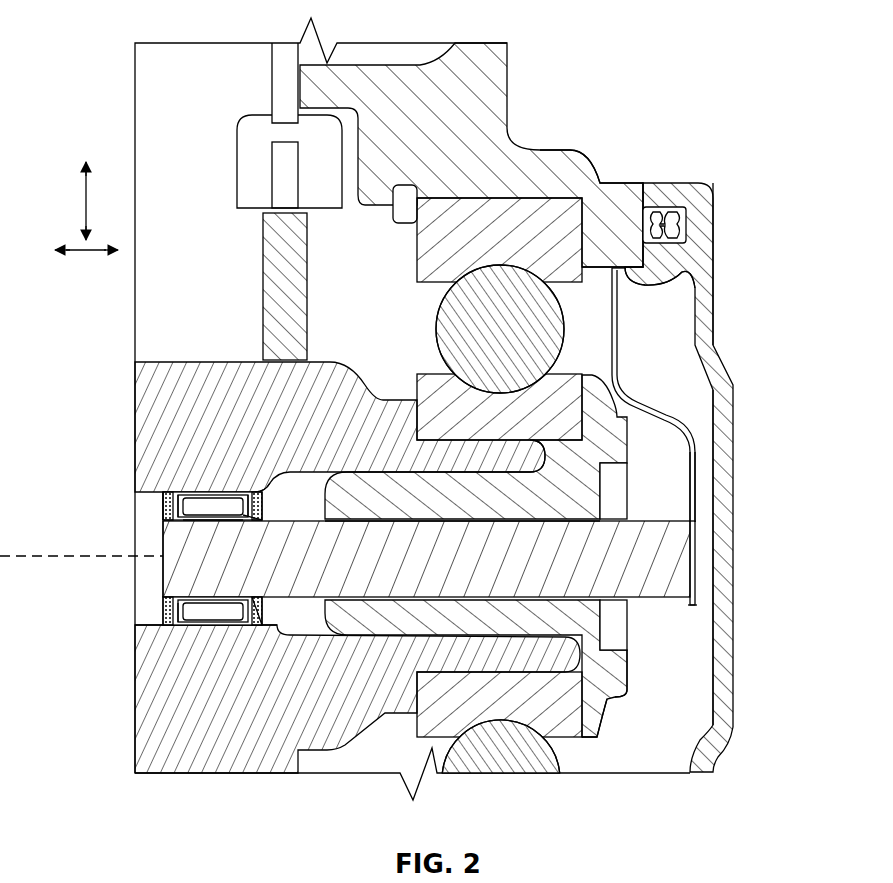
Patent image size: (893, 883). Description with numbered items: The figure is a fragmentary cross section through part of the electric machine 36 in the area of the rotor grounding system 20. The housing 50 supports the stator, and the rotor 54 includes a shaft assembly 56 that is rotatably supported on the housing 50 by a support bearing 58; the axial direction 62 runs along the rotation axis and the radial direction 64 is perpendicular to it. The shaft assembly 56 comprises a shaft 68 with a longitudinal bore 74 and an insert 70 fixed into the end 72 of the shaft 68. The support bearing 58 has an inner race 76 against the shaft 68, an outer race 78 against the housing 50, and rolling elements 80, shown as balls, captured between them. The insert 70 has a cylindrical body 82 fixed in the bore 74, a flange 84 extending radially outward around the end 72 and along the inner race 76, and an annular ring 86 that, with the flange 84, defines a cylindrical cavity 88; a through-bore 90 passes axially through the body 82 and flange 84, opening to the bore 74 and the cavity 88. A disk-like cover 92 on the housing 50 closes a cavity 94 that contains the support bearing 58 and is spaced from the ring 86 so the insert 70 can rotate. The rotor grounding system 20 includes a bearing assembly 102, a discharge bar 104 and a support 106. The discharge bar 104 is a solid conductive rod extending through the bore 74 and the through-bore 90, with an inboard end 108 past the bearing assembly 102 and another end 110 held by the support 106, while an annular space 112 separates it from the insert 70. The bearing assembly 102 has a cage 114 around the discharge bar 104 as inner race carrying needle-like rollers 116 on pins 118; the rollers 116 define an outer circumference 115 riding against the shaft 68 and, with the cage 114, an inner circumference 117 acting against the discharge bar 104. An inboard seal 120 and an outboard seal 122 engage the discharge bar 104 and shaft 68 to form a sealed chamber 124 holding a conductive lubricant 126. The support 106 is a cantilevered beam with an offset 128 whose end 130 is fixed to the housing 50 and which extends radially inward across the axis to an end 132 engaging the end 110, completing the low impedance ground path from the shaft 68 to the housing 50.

The rotor grounding system 20 is at (713, 547).
The electric machine 36 is at (703, 153).
The housing 50 is at (452, 143).
The rotor 54 is at (350, 352).
The shaft assembly 56 is at (130, 668).
The support bearing 58 is at (533, 190).
The axial direction 62 is at (87, 257).
The radial direction 64 is at (86, 202).
The shaft 68 is at (333, 433).
The insert 70 is at (433, 512).
The end 72 is at (607, 653).
The bore 74 is at (320, 490).
The inner race 76 is at (512, 425).
The outer race 78 is at (512, 253).
The rolling elements 80 is at (515, 343).
The cylindrical body 82 is at (365, 637).
The flange 84 is at (597, 727).
The ring 86 is at (627, 688).
The cavity 88 is at (630, 504).
The through-bore 90 is at (513, 528).
The cover 92 is at (732, 703).
The cavity 94 is at (660, 333).
The bearing assembly 102 is at (217, 630).
The discharge bar 104 is at (508, 575).
The support 106 is at (700, 450).
The end 108 is at (163, 562).
The end 110 is at (697, 557).
The space 112 is at (613, 613).
The cage 114 is at (163, 503).
The outer circumference 115 is at (192, 507).
The rollers 116 is at (182, 492).
The inner circumference 117 is at (233, 517).
The pins 118 is at (248, 508).
The inboard seal 120 is at (163, 610).
The outboard seal 122 is at (253, 613).
The chamber 124 is at (183, 627).
The lubricant 126 is at (192, 522).
The offset 128 is at (647, 410).
The end 130 is at (675, 272).
The end 132 is at (699, 603).